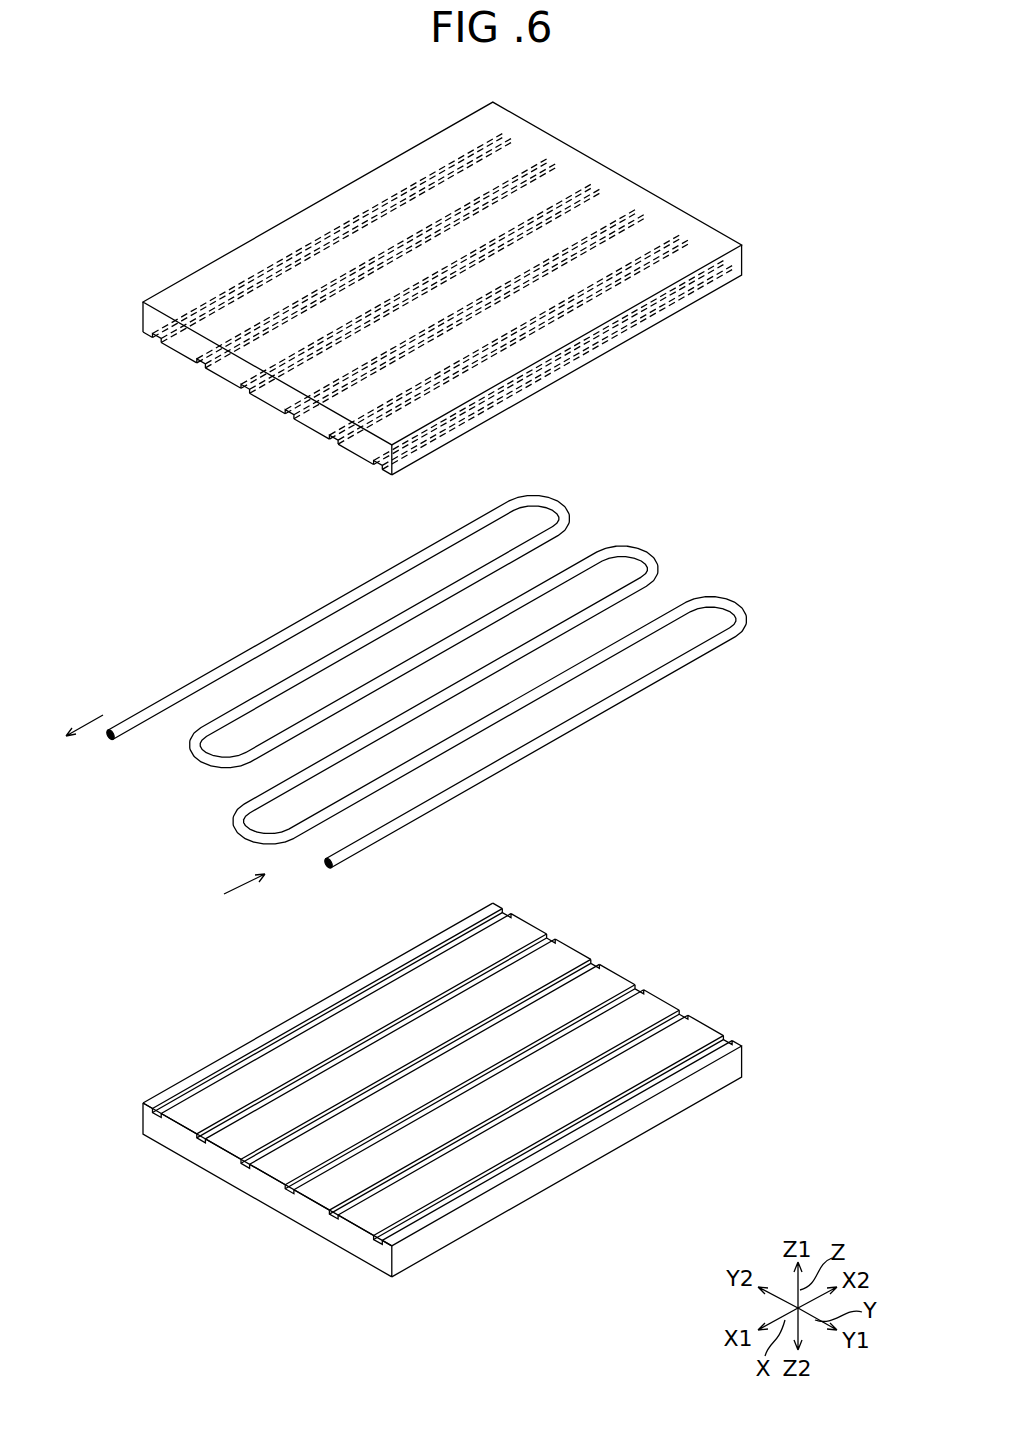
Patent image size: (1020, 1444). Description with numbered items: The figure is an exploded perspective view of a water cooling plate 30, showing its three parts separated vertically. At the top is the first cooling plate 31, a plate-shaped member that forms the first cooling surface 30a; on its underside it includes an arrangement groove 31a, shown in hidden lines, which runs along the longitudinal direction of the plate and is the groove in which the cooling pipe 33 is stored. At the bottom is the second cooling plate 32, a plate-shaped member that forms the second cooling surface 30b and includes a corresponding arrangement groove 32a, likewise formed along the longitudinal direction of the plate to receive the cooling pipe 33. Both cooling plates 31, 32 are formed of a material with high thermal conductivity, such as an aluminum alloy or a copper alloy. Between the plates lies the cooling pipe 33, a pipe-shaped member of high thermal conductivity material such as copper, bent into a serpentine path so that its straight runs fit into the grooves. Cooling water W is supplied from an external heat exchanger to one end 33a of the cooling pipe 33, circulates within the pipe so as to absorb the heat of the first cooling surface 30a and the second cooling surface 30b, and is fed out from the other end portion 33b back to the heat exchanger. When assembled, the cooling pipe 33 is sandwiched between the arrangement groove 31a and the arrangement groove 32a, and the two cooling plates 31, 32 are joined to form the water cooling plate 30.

The water cooling plate 30 is at (624, 126).
The first cooling surface 30a is at (668, 212).
The second cooling surface 30b is at (577, 1158).
The first cooling plate 31 is at (748, 259).
The arrangement groove 31a is at (159, 344).
The second cooling plate 32 is at (748, 1059).
The arrangement groove 32a is at (205, 1087).
The cooling pipe 33 is at (633, 556).
The one end 33a is at (323, 866).
The other end portion 33b is at (108, 742).